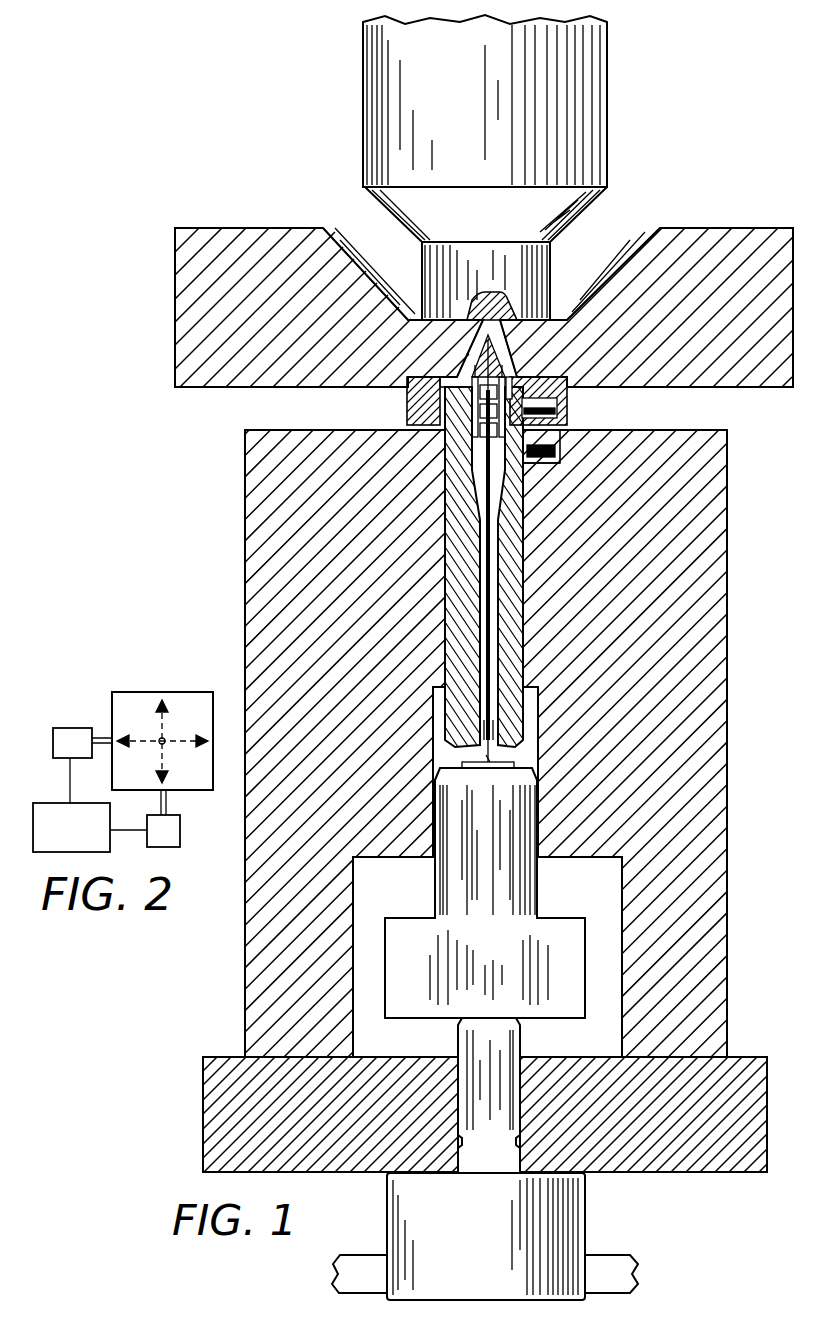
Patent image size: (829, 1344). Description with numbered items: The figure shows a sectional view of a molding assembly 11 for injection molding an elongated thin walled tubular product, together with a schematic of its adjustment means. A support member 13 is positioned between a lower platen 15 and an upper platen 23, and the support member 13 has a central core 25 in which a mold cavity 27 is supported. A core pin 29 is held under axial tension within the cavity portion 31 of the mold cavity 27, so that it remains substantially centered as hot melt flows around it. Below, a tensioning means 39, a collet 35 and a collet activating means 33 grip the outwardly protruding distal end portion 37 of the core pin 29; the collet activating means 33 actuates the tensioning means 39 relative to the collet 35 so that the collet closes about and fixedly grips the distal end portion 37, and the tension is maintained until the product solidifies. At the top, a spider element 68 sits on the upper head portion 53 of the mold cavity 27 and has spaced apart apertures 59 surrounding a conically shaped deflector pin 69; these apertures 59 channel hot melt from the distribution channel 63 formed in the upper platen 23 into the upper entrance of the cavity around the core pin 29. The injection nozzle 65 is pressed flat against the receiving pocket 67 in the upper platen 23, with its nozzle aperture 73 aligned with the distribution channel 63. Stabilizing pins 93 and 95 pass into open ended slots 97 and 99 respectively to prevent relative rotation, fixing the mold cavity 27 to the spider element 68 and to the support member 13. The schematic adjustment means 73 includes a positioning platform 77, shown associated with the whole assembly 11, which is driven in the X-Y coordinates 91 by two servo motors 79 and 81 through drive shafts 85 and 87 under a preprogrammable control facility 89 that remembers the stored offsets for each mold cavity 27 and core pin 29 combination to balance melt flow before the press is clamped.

In FIG. 1, the mold assembly 11 is at (760, 753).
In FIG. 1, the support member 13 is at (728, 674).
In FIG. 1, the lower platen 15 is at (760, 1058).
In FIG. 1, the upper platen 23 is at (484, 315).
In FIG. 1, the central core 25 is at (538, 701).
In FIG. 1, the mold cavity 27 is at (524, 624).
In FIG. 1, the core pin 29 is at (496, 686).
In FIG. 1, the cavity portion 31 is at (490, 654).
In FIG. 1, the collet activating means 33 is at (543, 908).
In FIG. 1, the collet 35 is at (514, 764).
In FIG. 1, the distal end portion 37 is at (505, 754).
In FIG. 1, the tensioning means 39 is at (383, 1179).
In FIG. 1, the upper head portion 53 is at (408, 413).
In FIG. 1, the apertures 59 is at (520, 381).
In FIG. 1, the distribution channel 63 is at (472, 344).
In FIG. 1, the injection nozzle 65 is at (597, 211).
In FIG. 1, the receiving pocket 67 is at (632, 245).
In FIG. 1, the spider element 68 is at (567, 379).
In FIG. 1, the deflector pin 69 is at (520, 341).
In FIG. 1, the nozzle aperture / adjustment means 73 is at (495, 290).
In FIG. 2, the nozzle aperture / adjustment means 73 is at (184, 678).
In FIG. 1, the positioning platform 77 is at (352, 1257).
In FIG. 2, the positioning platform 77 is at (213, 742).
In FIG. 2, the servo motor 79 is at (170, 849).
In FIG. 2, the servo motor 81 is at (72, 728).
In FIG. 2, the drive shaft 85 is at (168, 805).
In FIG. 2, the drive shaft 87 is at (100, 738).
In FIG. 2, the control facility 89 is at (92, 852).
In FIG. 2, the X-Y coordinates 91 is at (169, 721).
In FIG. 1, the stabilizing pin 93 is at (567, 390).
In FIG. 1, the stabilizing pin 95 is at (558, 453).
In FIG. 1, the open ended slot 97 is at (560, 417).
In FIG. 1, the open ended slot 99 is at (530, 468).